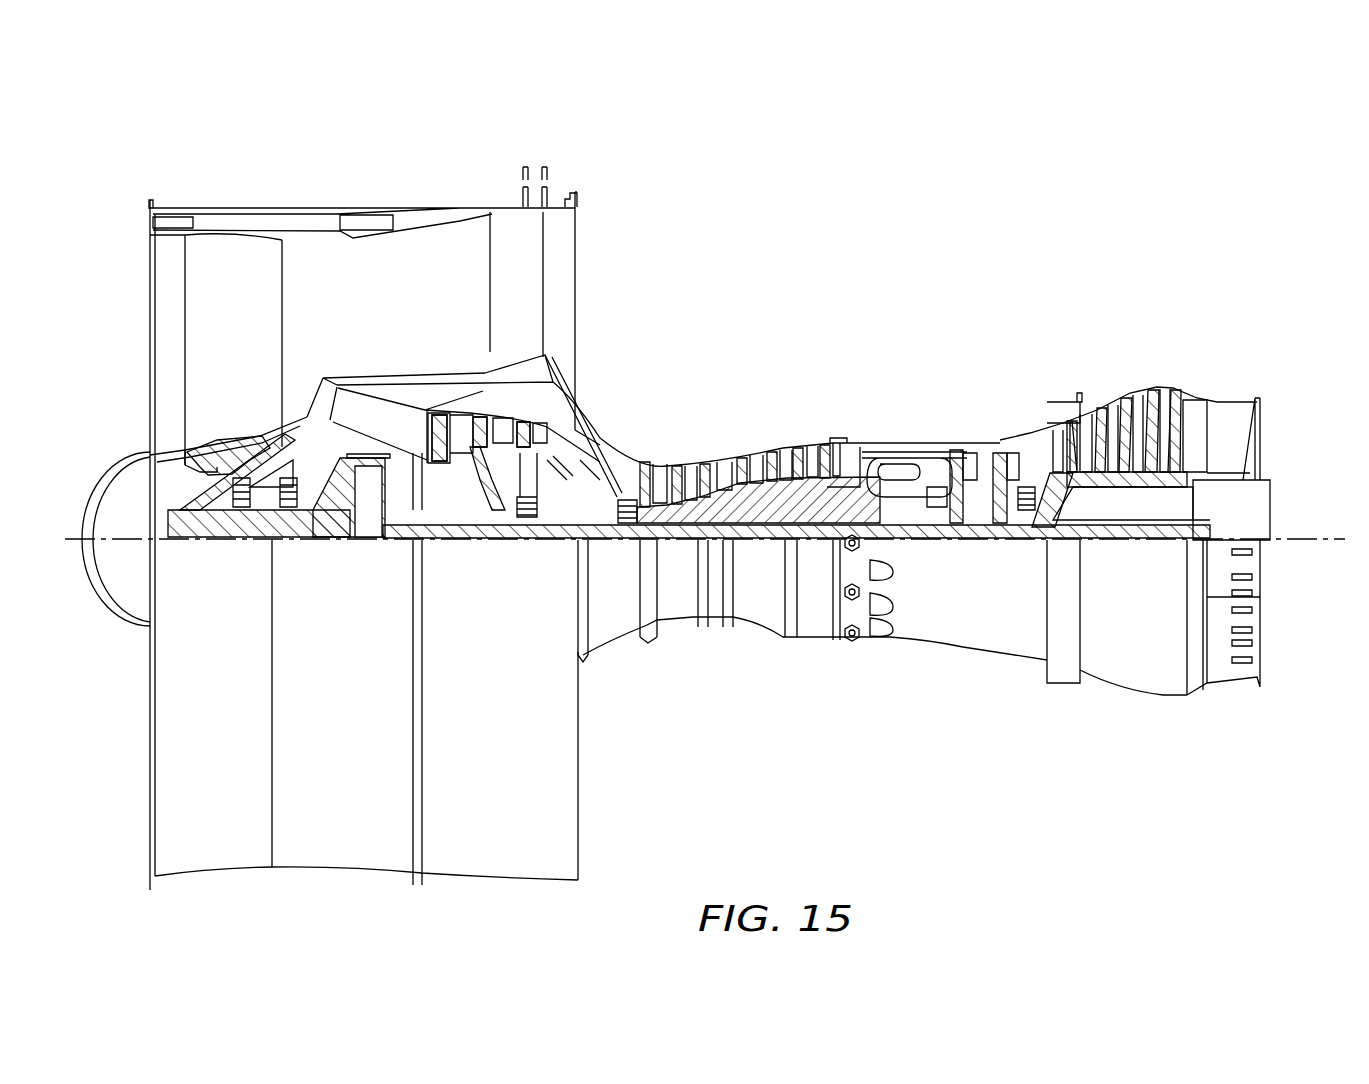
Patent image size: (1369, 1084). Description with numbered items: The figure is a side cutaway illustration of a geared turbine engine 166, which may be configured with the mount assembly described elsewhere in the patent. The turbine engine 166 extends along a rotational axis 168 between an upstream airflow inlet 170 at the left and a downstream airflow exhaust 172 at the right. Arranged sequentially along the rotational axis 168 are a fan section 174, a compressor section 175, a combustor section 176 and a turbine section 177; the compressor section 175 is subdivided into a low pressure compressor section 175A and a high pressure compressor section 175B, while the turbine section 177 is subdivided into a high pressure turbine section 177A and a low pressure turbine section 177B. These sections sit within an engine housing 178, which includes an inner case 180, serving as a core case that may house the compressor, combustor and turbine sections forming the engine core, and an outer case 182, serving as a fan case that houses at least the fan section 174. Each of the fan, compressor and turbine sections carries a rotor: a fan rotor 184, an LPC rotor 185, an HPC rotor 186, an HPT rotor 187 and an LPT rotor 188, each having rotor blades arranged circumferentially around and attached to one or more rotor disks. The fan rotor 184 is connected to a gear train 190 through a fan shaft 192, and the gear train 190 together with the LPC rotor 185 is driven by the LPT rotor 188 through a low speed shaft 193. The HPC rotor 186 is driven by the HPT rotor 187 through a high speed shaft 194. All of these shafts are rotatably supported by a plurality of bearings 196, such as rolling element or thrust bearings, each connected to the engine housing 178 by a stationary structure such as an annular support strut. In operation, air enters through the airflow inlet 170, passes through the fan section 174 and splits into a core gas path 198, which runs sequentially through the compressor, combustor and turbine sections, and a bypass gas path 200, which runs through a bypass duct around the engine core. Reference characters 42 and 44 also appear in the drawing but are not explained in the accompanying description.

The geared turbine engine 166 is at (118, 188).
The rotational axis 168 is at (1320, 565).
The upstream airflow inlet 170 is at (148, 290).
The downstream airflow exhaust 172 is at (1262, 430).
The fan section 174 is at (330, 185).
The compressor section 175 is at (405, 122).
The low pressure compressor section 175A is at (580, 170).
The high pressure compressor section 175B is at (810, 370).
The combustor section 176 is at (832, 370).
The turbine section 177 is at (945, 297).
The high pressure turbine section 177A is at (1025, 370).
The low pressure turbine section 177B is at (1217, 370).
The engine housing 178 is at (642, 698).
The inner case 180 is at (770, 630).
The outer case 182 is at (530, 880).
The fan rotor 184 is at (167, 458).
The LPC rotor 185 is at (473, 487).
The HPC rotor 186 is at (763, 500).
The HPT rotor 187 is at (995, 520).
The LPT rotor 188 is at (1128, 475).
The gear train 190 is at (372, 545).
The fan shaft 192 is at (225, 545).
The low speed shaft 193 is at (812, 548).
The high speed shaft 194 is at (905, 522).
The bearings 196 is at (256, 545).
The core gas path 198 is at (600, 456).
The bypass gas path 200 is at (383, 303).
The combustor 42 is at (895, 468).
The fan case 44 is at (578, 263).